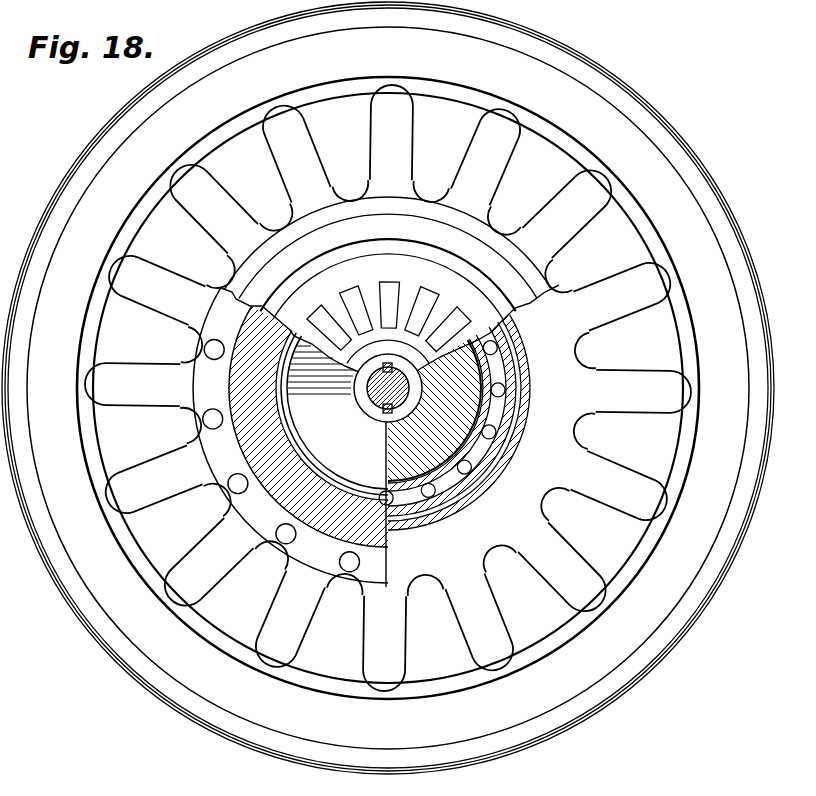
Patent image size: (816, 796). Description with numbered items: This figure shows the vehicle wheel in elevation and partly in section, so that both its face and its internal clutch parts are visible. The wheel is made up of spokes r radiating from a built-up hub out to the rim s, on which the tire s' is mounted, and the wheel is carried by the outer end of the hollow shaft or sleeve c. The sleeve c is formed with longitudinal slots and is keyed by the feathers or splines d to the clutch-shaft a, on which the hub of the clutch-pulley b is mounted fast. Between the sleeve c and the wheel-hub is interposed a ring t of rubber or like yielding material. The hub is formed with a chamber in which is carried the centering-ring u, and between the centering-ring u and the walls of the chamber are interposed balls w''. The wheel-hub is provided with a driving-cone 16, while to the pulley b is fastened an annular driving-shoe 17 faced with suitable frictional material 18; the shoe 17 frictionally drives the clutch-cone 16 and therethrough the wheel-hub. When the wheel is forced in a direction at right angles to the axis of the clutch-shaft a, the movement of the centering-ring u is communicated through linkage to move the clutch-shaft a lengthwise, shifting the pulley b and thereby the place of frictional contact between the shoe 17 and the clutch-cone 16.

The driving-cone 16 is at (522, 258).
The annular driving-shoe 17 is at (273, 307).
The frictional material 18 is at (508, 297).
The rim S is at (395, 388).
The tire S' is at (388, 388).
The clutch-shaft a is at (378, 392).
The clutch-pulley b is at (333, 350).
The hollow shaft or sleeve c is at (376, 414).
The feathers or splines d is at (390, 364).
The hub h is at (434, 410).
The spokes r is at (655, 300).
The ring of rubber or like yielding material t is at (480, 497).
The centering-ring u is at (497, 423).
The balls w'' is at (481, 413).